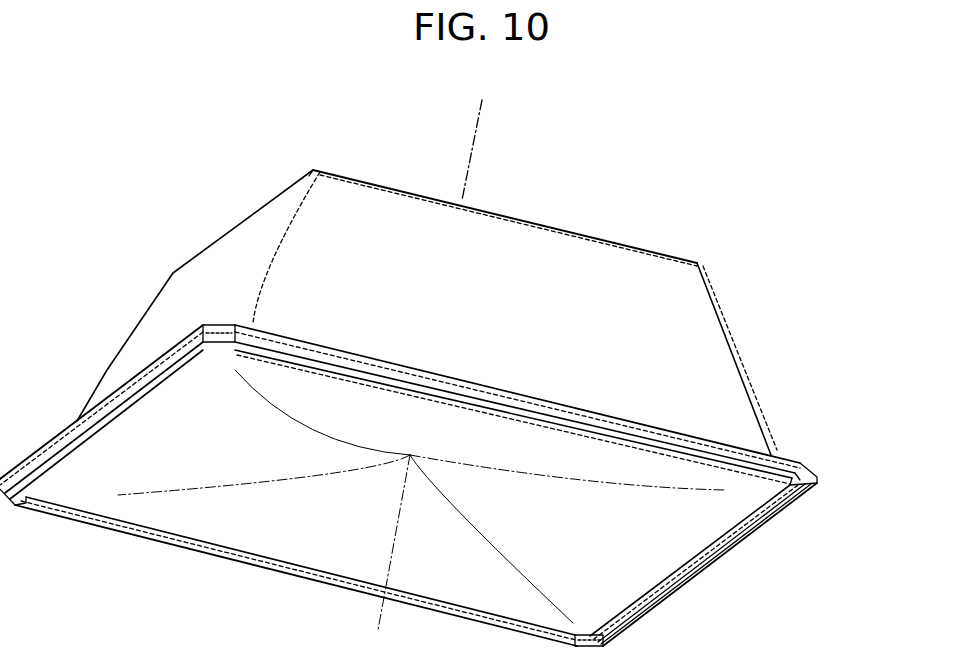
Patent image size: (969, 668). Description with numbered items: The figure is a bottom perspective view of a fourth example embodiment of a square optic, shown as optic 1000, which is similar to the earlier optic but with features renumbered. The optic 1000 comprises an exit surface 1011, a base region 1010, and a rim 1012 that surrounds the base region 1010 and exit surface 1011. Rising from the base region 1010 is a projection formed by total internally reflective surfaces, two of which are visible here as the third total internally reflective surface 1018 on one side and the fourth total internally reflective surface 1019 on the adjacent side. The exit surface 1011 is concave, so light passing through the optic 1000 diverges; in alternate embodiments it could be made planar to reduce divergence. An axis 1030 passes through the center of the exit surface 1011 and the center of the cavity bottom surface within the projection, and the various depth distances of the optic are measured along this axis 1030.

The optic 1000 is at (817, 96).
The base region 1010 is at (858, 476).
The exit surface 1011 is at (680, 525).
The rim 1012 is at (783, 507).
The third total internally reflective surface 1018 is at (175, 305).
The fourth total internally reflective surface 1019 is at (683, 335).
The axis 1030 is at (480, 115).